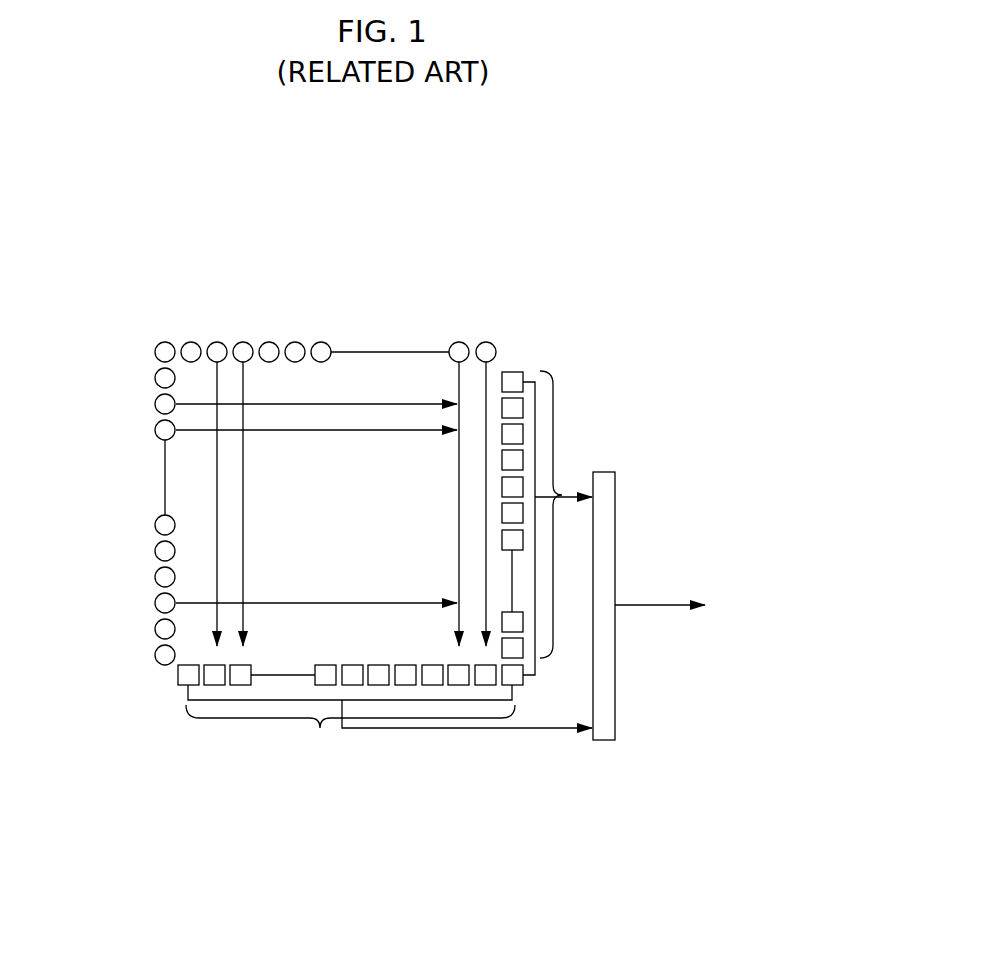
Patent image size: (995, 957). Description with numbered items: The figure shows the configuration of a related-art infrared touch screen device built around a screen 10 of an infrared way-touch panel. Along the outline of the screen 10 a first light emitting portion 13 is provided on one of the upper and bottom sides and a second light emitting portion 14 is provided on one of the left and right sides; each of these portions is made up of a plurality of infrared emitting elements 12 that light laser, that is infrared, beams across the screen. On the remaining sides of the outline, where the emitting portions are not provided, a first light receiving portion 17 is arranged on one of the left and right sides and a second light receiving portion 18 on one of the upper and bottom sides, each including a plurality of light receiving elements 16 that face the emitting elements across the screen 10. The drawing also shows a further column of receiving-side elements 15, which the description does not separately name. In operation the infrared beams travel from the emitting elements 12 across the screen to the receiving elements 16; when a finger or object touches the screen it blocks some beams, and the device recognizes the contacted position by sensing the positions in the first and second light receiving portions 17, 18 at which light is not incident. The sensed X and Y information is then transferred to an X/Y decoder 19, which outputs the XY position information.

The screen 10 is at (322, 573).
The infrared emitting elements 12 is at (272, 472).
The first light emitting portion 13 is at (490, 331).
The second light emitting portion 14 is at (132, 508).
The Y sensing circuits 15 is at (510, 372).
The light receiving elements 16 is at (178, 675).
The first light receiving portion 17 is at (567, 514).
The second light receiving portion 18 is at (350, 733).
The X/Y decoder 19 is at (605, 738).